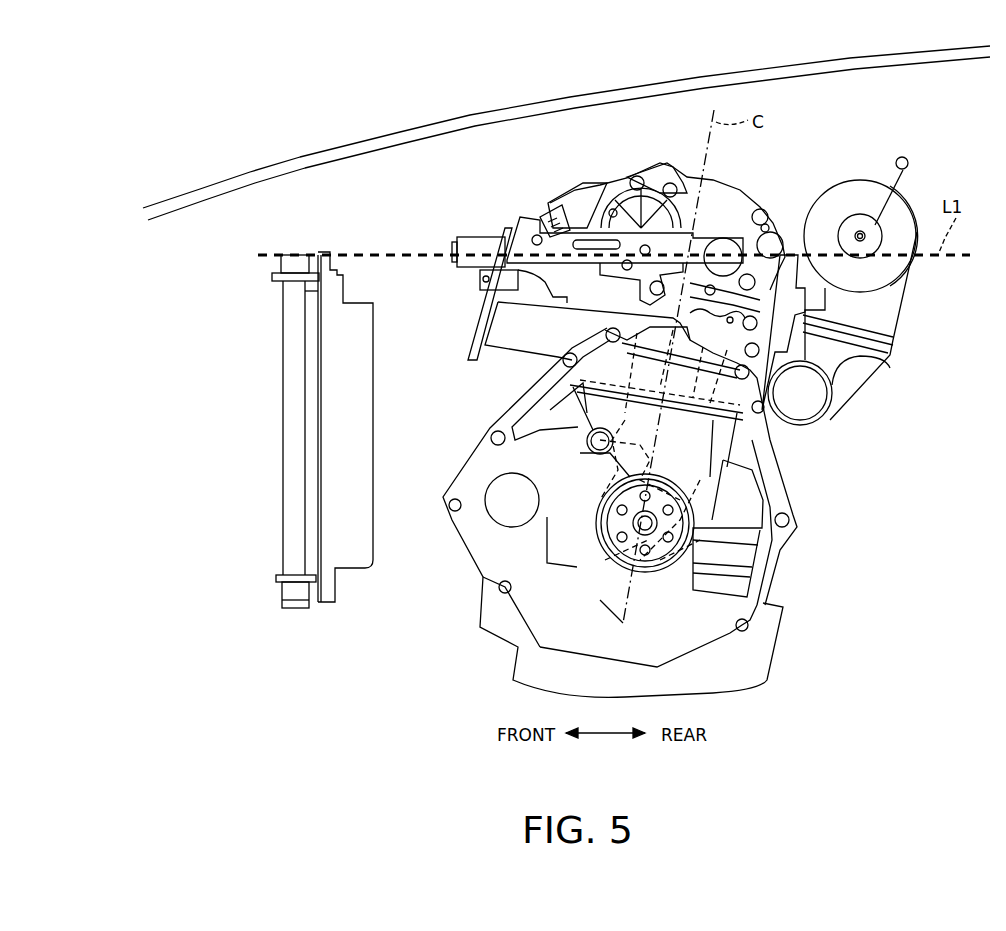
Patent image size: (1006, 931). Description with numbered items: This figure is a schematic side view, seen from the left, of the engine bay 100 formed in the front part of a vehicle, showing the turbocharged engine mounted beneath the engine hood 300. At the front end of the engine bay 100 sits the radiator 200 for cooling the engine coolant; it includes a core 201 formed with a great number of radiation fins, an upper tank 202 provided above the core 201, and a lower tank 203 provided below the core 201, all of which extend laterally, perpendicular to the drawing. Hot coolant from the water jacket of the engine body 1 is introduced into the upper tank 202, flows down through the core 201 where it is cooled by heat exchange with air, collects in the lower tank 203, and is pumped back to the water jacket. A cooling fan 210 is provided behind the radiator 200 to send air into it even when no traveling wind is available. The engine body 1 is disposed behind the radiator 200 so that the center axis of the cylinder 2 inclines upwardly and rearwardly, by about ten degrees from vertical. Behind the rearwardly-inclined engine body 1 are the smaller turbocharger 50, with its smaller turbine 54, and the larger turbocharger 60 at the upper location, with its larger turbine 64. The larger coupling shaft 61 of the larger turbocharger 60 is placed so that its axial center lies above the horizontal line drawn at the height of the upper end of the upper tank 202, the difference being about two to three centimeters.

The engine body 1 is at (783, 547).
The cylinder 2 is at (762, 445).
The smaller turbocharger 50 is at (884, 312).
The smaller turbine 54 is at (858, 375).
The larger turbocharger 60 is at (902, 215).
The larger coupling shaft 61 is at (860, 230).
The larger turbine 64 is at (893, 297).
The engine bay 100 is at (402, 721).
The radiator 200 is at (247, 431).
The core 201 is at (285, 430).
The upper tank 202 is at (288, 270).
The lower tank 203 is at (290, 592).
The cooling fan 210 is at (364, 450).
The engine hood 300 is at (588, 97).